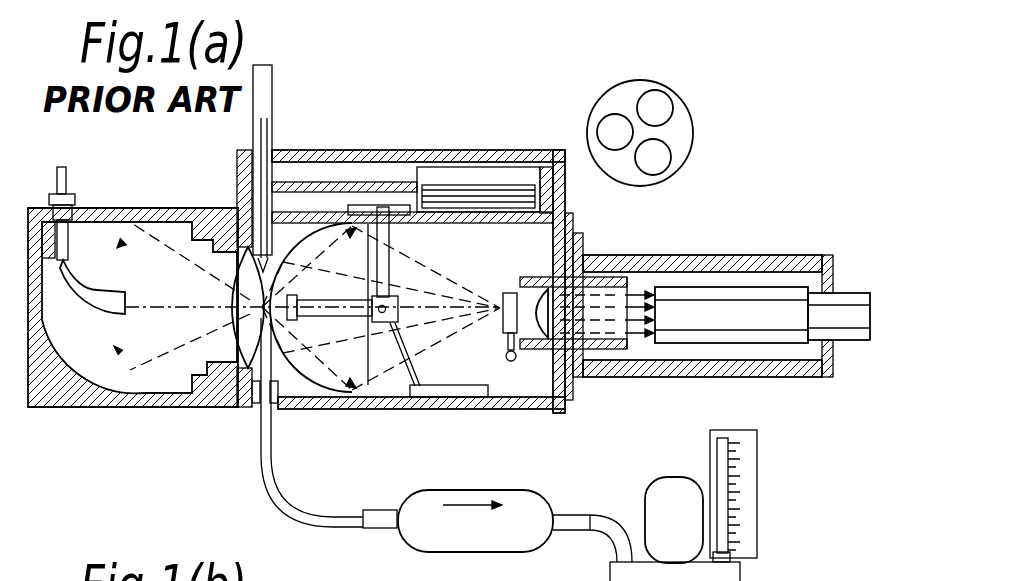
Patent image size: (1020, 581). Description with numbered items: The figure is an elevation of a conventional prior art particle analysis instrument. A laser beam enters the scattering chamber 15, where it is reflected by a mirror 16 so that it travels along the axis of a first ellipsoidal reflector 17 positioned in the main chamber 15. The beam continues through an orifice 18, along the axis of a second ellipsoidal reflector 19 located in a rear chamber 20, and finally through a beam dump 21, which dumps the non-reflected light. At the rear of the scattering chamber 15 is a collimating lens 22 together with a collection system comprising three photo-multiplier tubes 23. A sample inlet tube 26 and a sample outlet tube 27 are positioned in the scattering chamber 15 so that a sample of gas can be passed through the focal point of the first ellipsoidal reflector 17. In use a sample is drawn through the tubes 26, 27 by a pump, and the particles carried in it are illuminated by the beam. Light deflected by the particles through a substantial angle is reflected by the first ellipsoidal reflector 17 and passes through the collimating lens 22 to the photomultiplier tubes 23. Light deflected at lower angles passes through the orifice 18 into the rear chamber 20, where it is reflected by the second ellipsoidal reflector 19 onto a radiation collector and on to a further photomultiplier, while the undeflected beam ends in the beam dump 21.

The scattering chamber 15 is at (493, 263).
The mirror 16 is at (398, 297).
The first ellipsoidal reflector 17 is at (276, 236).
The orifice 18 is at (224, 407).
The second ellipsoidal reflector 19 is at (63, 407).
The rear chamber 20 is at (103, 327).
The beam dump 21 is at (97, 290).
The collimating lens 22 is at (578, 350).
The photo-multiplier tubes 23 is at (688, 320).
The sample inlet tube 26 is at (272, 167).
The sample outlet tube 27 is at (272, 422).